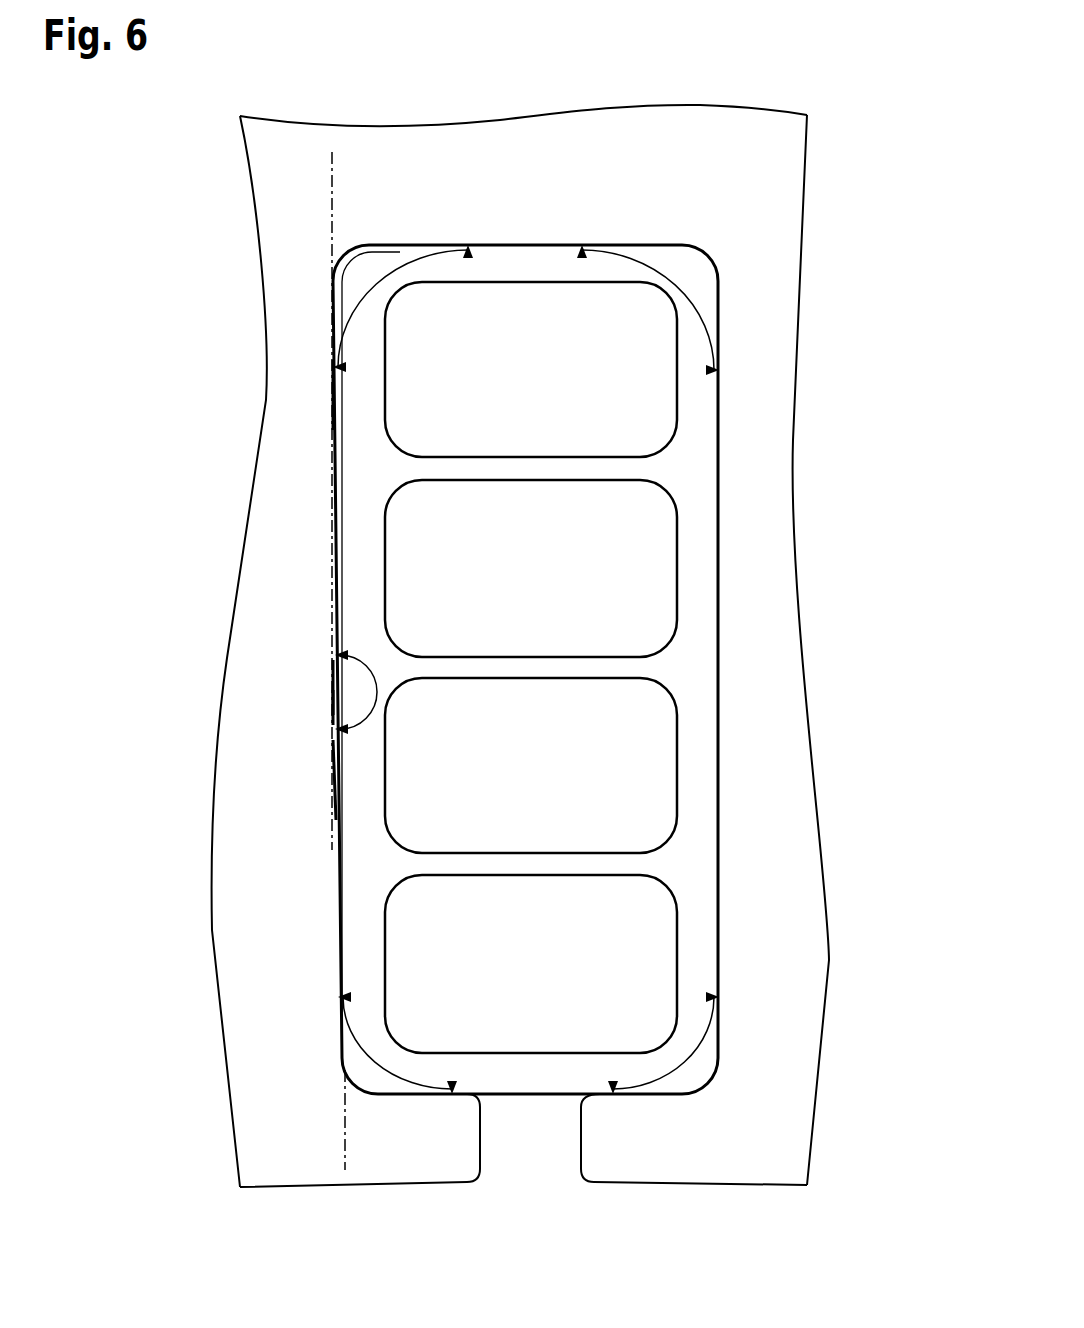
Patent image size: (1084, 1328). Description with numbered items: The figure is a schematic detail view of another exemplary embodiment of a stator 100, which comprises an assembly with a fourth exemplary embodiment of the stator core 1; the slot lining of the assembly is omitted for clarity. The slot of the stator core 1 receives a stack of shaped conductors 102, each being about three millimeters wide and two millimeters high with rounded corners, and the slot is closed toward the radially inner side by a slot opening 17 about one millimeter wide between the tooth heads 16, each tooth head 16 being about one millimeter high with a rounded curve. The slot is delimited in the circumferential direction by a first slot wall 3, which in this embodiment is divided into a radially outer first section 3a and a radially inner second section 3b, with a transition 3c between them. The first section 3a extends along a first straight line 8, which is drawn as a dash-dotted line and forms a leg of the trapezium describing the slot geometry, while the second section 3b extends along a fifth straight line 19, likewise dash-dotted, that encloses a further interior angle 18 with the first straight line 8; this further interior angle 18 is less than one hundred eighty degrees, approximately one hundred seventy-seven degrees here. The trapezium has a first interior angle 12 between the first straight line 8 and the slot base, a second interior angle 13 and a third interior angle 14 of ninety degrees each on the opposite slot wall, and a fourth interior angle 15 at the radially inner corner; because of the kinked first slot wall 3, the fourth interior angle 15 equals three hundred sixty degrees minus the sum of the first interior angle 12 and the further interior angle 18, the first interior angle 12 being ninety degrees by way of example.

The stator 100 is at (553, 646).
The stator core 1 is at (741, 136).
The first slot wall 3 is at (333, 550).
The first section 3a is at (333, 393).
The second section 3b is at (333, 775).
The third edge section 3c is at (333, 692).
The first straight line 8 is at (332, 193).
The first interior angle 12 is at (432, 315).
The second interior angle 13 is at (610, 325).
The third interior angle 14 is at (643, 1023).
The fourth interior angle 15 is at (417, 1017).
The tooth head 16 is at (737, 1162).
The slot opening 17 is at (530, 1162).
The further interior angle 18 is at (333, 707).
The fifth straight line 19 is at (345, 1127).
The shaped conductor 102 is at (647, 415).